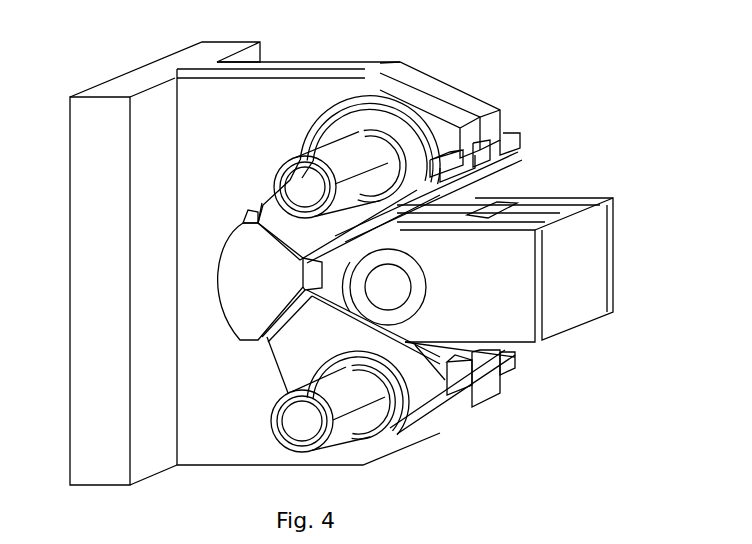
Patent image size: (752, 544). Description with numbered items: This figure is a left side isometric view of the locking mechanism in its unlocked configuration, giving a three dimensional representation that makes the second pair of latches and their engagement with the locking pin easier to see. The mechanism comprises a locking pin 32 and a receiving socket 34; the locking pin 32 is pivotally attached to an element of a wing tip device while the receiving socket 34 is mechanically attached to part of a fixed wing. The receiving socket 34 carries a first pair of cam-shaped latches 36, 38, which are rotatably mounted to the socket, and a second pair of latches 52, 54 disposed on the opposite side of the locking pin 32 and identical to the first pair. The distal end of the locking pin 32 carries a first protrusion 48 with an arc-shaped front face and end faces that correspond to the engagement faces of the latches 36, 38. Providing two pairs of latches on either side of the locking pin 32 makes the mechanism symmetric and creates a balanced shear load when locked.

The locking pin 32 is at (425, 207).
The receiving socket 34 is at (302, 117).
The latch 36 is at (410, 140).
The latch 38 is at (410, 415).
The first protrusion 48 is at (240, 318).
The latch 52 is at (513, 135).
The latch 54 is at (515, 363).